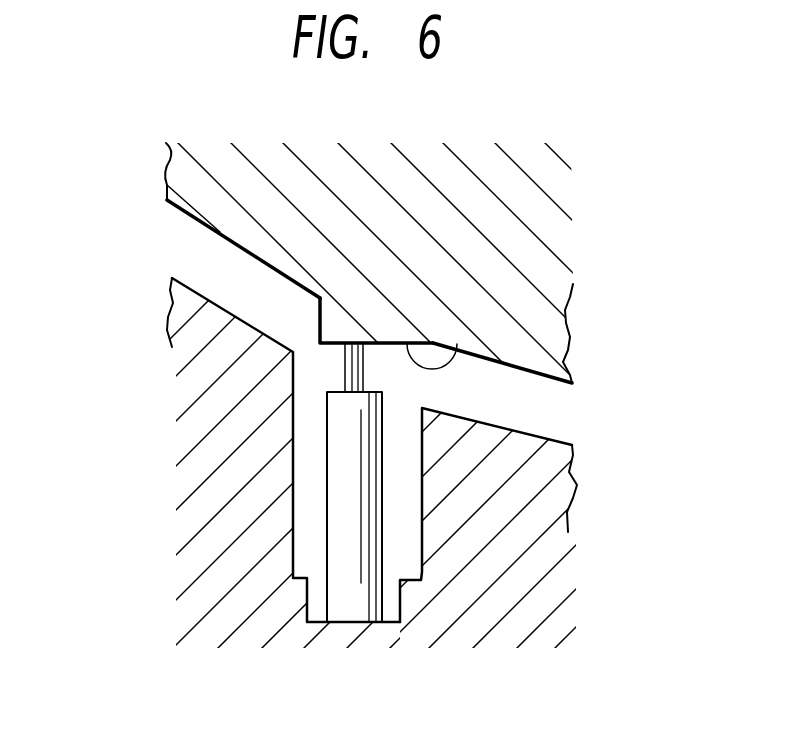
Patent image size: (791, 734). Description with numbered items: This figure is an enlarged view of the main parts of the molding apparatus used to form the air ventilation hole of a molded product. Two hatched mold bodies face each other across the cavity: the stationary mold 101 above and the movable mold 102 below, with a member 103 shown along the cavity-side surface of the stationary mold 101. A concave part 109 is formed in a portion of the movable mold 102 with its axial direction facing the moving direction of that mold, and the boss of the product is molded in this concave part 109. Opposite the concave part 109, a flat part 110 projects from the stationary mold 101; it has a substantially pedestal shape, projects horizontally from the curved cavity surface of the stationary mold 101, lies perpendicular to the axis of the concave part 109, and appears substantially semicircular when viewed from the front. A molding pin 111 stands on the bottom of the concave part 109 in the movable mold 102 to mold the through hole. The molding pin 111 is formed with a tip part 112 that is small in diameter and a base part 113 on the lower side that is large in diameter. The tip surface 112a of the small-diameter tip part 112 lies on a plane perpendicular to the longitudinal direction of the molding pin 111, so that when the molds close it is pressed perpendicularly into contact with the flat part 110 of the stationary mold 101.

The stationary mold 101 is at (435, 213).
The movable mold 102 is at (195, 472).
The sheet member 103 is at (200, 248).
The concave part 109 is at (422, 543).
The flat part 110 is at (453, 354).
The molding pin 111 is at (327, 527).
The tip part 112 is at (345, 371).
The tip surface 112a is at (357, 343).
The base part 113 is at (355, 557).